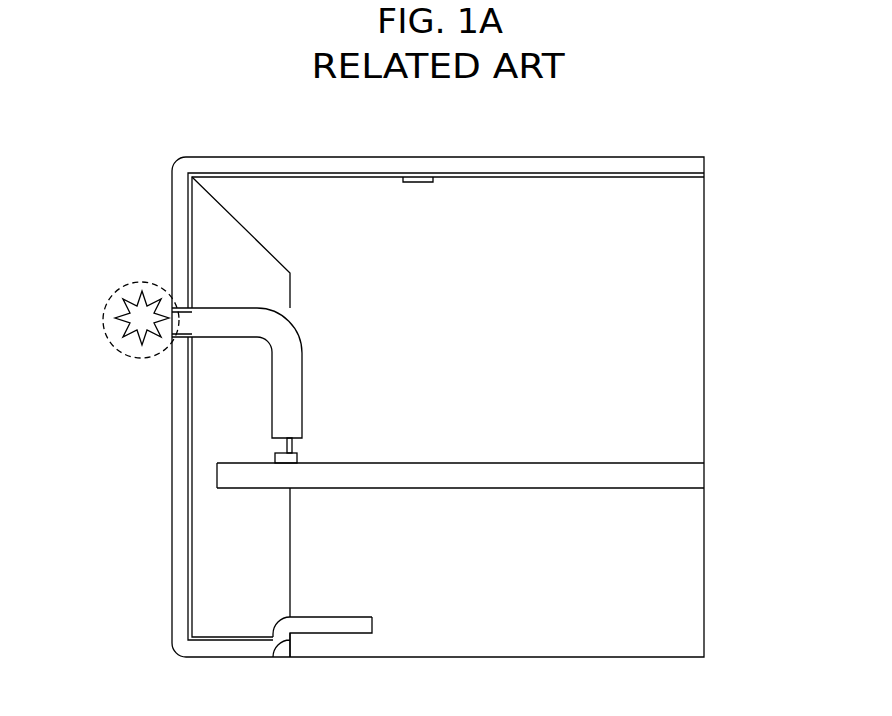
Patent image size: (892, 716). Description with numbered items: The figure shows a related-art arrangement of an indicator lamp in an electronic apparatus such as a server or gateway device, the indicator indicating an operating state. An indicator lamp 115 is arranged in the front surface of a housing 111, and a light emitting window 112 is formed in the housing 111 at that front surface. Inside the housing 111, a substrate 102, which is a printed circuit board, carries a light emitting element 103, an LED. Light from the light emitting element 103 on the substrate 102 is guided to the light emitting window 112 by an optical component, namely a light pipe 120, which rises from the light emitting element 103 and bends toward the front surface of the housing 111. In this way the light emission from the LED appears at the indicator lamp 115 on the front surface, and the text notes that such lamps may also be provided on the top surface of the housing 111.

The housing 111 is at (676, 154).
The light pipe 120 is at (237, 308).
The light emitting window 112 is at (173, 338).
The indicator lamp 115 is at (128, 284).
The light emitting element (LED) 103 is at (275, 456).
The substrate (printed circuit board) 102 is at (670, 463).